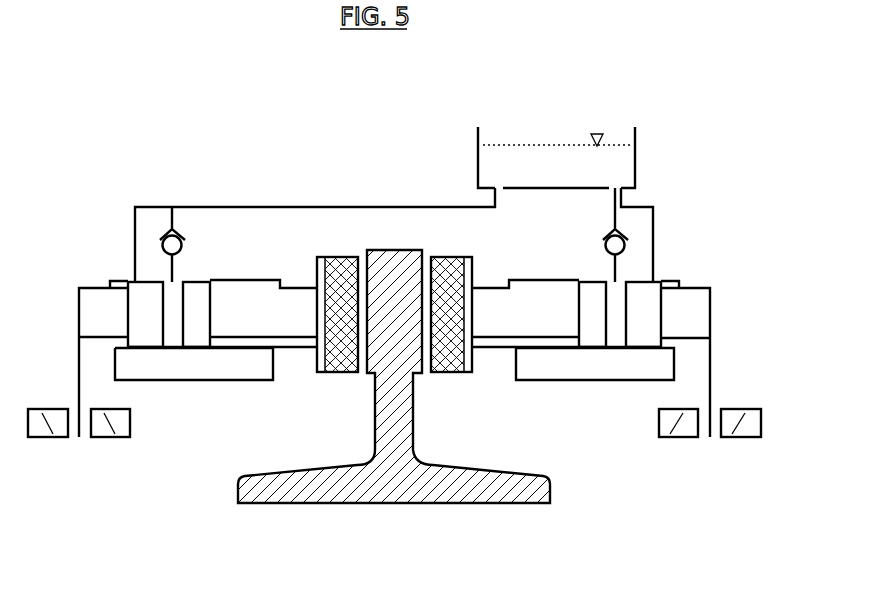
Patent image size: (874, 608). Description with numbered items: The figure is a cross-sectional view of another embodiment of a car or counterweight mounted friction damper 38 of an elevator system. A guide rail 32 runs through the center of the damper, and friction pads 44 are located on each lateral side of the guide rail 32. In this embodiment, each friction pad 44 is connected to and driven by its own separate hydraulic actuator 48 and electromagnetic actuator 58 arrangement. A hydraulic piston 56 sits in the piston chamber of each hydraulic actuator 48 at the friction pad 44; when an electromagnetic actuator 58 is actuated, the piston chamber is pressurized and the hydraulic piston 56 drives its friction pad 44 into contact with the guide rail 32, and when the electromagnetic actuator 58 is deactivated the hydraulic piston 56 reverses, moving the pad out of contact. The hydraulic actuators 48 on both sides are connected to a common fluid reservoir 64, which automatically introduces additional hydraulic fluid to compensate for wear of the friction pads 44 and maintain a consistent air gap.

The guide rail 32 is at (393, 417).
The lubrication circuit 38 is at (668, 138).
The friction pads 44 is at (342, 343).
The hydraulic actuator 48 is at (239, 303).
The hydraulic piston 56 is at (300, 324).
The electromagnetic actuator 58 is at (112, 310).
The fluid reservoir 64 is at (550, 142).